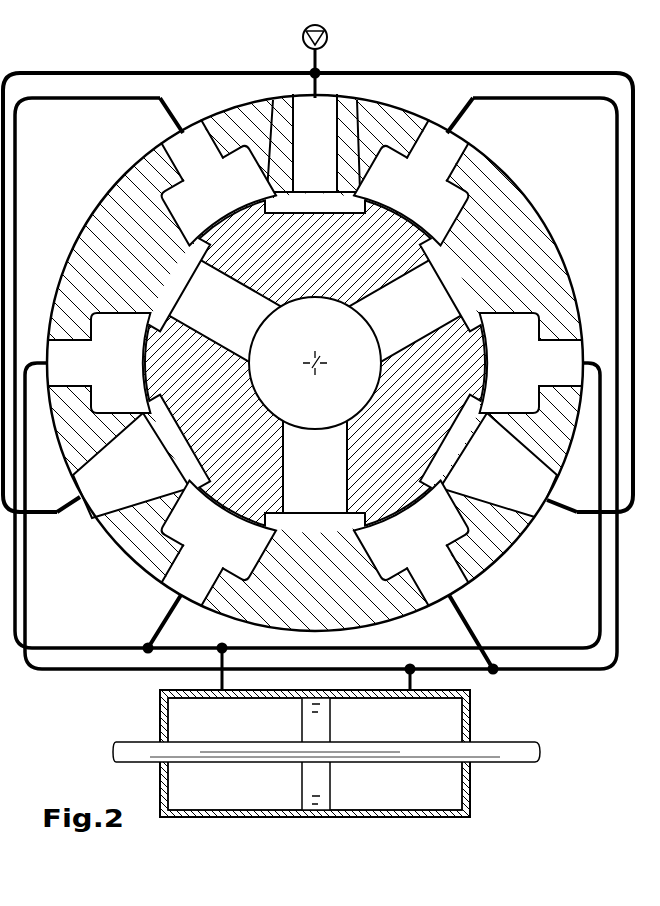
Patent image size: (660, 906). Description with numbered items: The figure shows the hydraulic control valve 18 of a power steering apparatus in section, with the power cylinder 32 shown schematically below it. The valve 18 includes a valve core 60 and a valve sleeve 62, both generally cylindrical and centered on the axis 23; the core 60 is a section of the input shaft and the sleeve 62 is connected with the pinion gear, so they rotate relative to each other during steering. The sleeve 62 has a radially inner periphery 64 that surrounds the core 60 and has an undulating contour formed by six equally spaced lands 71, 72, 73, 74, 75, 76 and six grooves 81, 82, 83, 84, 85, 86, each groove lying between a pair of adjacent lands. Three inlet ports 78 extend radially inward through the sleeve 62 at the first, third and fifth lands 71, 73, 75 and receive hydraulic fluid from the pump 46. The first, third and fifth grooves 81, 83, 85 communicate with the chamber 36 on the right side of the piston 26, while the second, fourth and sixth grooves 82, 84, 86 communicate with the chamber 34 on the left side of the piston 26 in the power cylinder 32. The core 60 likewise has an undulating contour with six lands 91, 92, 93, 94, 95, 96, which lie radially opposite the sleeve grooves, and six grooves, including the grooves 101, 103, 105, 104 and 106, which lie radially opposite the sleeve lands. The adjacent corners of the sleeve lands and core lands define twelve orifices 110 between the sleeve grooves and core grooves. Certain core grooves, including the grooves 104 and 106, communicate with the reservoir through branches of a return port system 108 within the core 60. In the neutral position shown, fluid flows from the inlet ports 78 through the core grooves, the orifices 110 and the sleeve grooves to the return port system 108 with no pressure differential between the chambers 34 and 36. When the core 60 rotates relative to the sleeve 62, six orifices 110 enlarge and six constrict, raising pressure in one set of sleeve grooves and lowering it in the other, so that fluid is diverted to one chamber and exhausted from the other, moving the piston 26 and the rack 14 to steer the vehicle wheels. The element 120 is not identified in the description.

The rack 14 is at (143, 742).
The valve 18 is at (70, 140).
The axis 23 is at (328, 345).
The piston 26 is at (318, 810).
The power cylinder 32 is at (245, 819).
The chamber 34 is at (251, 797).
The chamber 36 is at (406, 797).
The pump 46 is at (303, 30).
The valve core 60 is at (147, 280).
The valve sleeve 62 is at (190, 110).
The radially inner periphery 64 is at (200, 117).
The first land 71 is at (445, 144).
The second land 72 is at (543, 304).
The third land 73 is at (457, 581).
The fourth land 74 is at (284, 562).
The fifth land 75 is at (90, 445).
The sixth land 76 is at (145, 166).
The inlet ports 78 is at (325, 75).
The first groove 81 is at (430, 187).
The second groove 82 is at (527, 327).
The third groove 83 is at (417, 547).
The fourth groove 84 is at (170, 510).
The fifth groove 85 is at (113, 400).
The sixth groove 86 is at (273, 187).
The land 91 is at (440, 187).
The land 92 is at (530, 323).
The land 93 is at (440, 563).
The land 94 is at (235, 510).
The land 95 is at (112, 325).
The land 96 is at (187, 173).
The groove 101 is at (302, 210).
The groove 103 is at (445, 443).
The groove 105 is at (195, 458).
The groove 104 is at (318, 523).
The groove 106 is at (172, 297).
The rotor spoke 120 is at (447, 307).
The return port system 108 is at (332, 417).
The orifices 110 is at (427, 187).